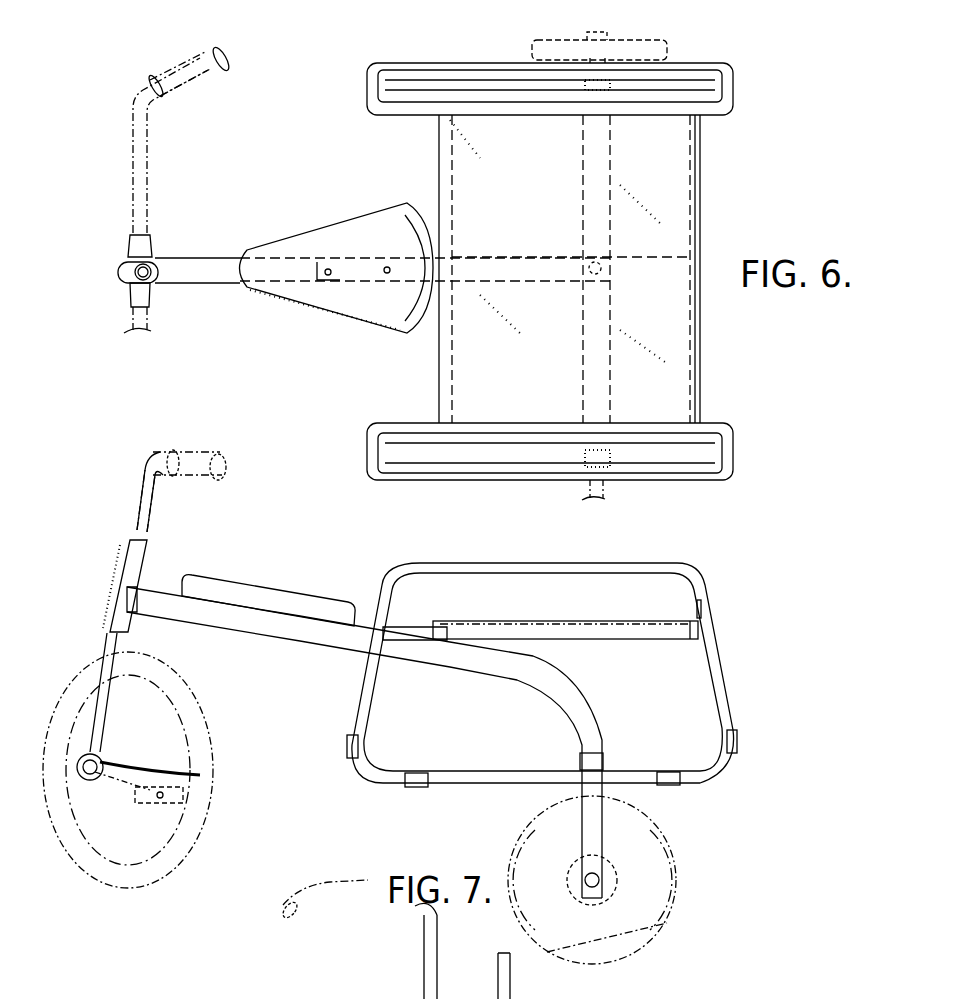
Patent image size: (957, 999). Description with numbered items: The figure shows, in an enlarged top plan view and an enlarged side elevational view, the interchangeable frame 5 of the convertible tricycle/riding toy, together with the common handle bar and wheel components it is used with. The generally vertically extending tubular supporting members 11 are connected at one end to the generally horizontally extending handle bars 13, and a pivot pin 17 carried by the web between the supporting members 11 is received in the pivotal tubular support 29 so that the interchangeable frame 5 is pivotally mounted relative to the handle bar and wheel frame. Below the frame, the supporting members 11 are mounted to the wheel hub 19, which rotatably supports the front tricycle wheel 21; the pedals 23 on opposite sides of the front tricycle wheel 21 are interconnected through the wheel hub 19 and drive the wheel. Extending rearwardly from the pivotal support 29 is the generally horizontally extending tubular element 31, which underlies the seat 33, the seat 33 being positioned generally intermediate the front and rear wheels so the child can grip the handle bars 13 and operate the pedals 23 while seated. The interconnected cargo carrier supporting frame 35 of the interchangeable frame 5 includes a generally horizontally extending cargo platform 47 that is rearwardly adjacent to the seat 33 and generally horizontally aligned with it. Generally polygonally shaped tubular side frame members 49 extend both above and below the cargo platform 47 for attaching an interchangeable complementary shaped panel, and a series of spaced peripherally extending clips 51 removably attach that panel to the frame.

In FIG. 6, the interchangeable frame 5 is at (825, 96).
In FIG. 7, the interchangeable frame 5 is at (815, 643).
In FIG. 7, the vertically extending tubular supporting member 11 is at (135, 517).
In FIG. 6, the handle bar 13 is at (203, 77).
In FIG. 7, the handle bar 13 is at (205, 478).
In FIG. 7, the pivot pin 17 is at (148, 540).
In FIG. 7, the wheel hub 19 is at (202, 768).
In FIG. 7, the front tricycle wheel 21 is at (195, 735).
In FIG. 7, the pedal 23 is at (185, 815).
In FIG. 6, the pivotal tubular support 29 is at (160, 264).
In FIG. 7, the pivotal tubular support 29 is at (135, 628).
In FIG. 6, the horizontally extending tubular element 31 is at (218, 274).
In FIG. 7, the horizontally extending tubular element 31 is at (356, 643).
In FIG. 6, the seat 33 is at (364, 246).
In FIG. 7, the seat 33 is at (320, 598).
In FIG. 6, the cargo carrier supporting frame 35 is at (703, 192).
In FIG. 7, the cargo carrier supporting frame 35 is at (625, 682).
In FIG. 6, the cargo platform 47 is at (676, 163).
In FIG. 7, the cargo platform 47 is at (628, 620).
In FIG. 6, the tubular side frame member 49 is at (716, 77).
In FIG. 7, the tubular side frame member 49 is at (703, 603).
In FIG. 7, the clip 51 is at (408, 787).